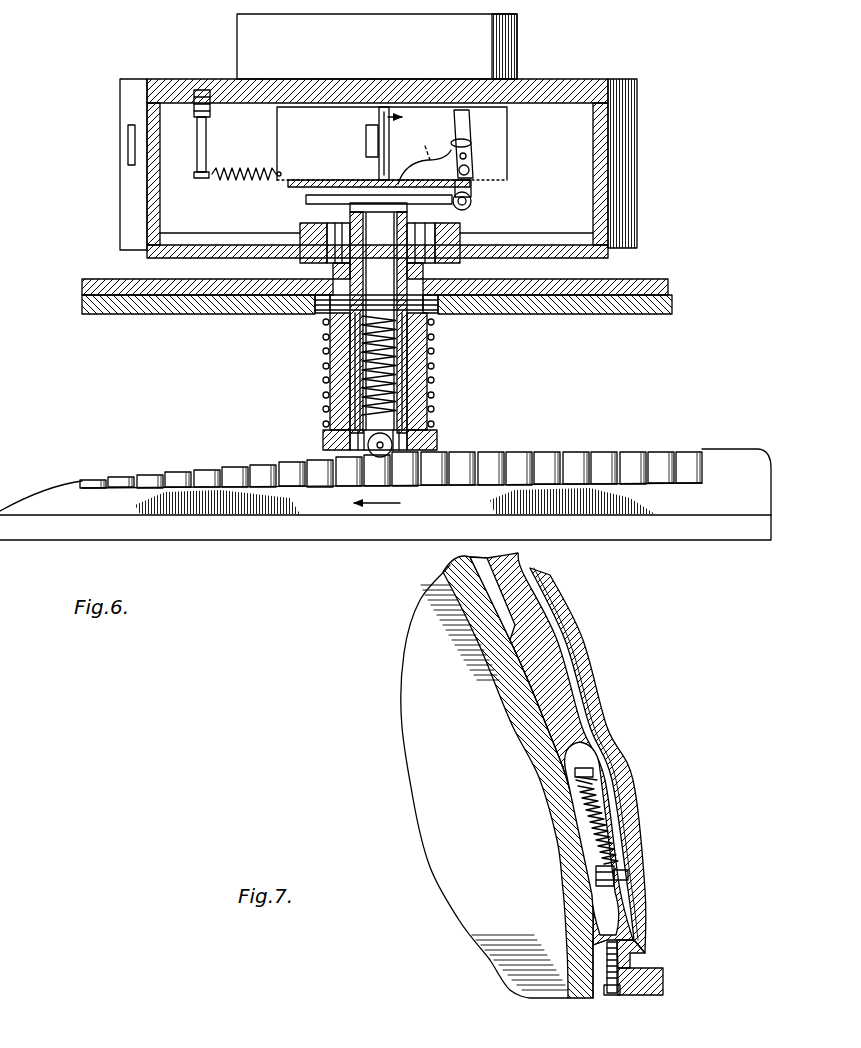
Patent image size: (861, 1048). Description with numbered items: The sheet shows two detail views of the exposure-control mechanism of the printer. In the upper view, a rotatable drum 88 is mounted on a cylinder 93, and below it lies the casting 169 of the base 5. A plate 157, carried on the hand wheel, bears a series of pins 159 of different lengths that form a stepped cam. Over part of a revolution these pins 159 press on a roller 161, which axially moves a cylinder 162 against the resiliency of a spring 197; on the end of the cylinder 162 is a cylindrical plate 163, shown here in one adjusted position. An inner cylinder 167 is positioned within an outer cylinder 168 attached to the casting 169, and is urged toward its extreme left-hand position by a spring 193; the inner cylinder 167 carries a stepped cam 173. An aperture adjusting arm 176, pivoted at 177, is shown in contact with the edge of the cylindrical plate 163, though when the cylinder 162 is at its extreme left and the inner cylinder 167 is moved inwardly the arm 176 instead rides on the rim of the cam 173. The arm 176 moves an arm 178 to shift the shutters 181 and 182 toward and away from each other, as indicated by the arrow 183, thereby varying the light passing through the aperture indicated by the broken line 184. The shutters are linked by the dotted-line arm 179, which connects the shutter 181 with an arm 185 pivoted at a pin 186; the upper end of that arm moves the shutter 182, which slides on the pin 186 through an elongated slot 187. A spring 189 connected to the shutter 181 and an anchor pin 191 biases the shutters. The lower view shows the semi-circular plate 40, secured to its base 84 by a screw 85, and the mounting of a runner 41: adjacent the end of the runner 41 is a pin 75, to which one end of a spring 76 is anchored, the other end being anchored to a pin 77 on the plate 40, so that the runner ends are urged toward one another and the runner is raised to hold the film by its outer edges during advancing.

In FIG. 6, the base 5 is at (650, 279).
In FIG. 7, the semi-circular plate 40 is at (546, 637).
In FIG. 7, the runner 41 is at (548, 598).
In FIG. 7, the pin 75 is at (600, 882).
In FIG. 7, the spring 76 is at (585, 840).
In FIG. 7, the pin 77 is at (580, 776).
In FIG. 7, the base 84 is at (664, 980).
In FIG. 7, the screw 85 is at (610, 996).
In FIG. 6, the rotatable drum 88 is at (624, 191).
In FIG. 6, the cylinder 93 is at (505, 51).
In FIG. 6, the plate 157 is at (345, 532).
In FIG. 6, the pins 159 is at (231, 463).
In FIG. 6, the roller 161 is at (386, 458).
In FIG. 6, the cylinder 162 is at (408, 232).
In FIG. 6, the cylindrical plate 163 is at (305, 201).
In FIG. 6, the cylinder 167 is at (412, 369).
In FIG. 6, the cylinder 168 is at (330, 374).
In FIG. 6, the casting 169 is at (583, 305).
In FIG. 6, the cam 173 is at (464, 263).
In FIG. 6, the aperture adjusting arm 176 is at (412, 168).
In FIG. 6, the pivot 177 is at (472, 204).
In FIG. 6, the arm 178 is at (473, 190).
In FIG. 6, the arm 179 is at (423, 143).
In FIG. 6, the shutter 181 is at (392, 143).
In FIG. 6, the shutter 182 is at (492, 118).
In FIG. 6, the arrow 183 is at (384, 106).
In FIG. 6, the broken line 184 is at (366, 149).
In FIG. 6, the arm 185 is at (474, 163).
In FIG. 6, the pin 186 is at (460, 143).
In FIG. 6, the elongated slot 187 is at (473, 143).
In FIG. 6, the spring 189 is at (251, 180).
In FIG. 6, the anchor pin 191 is at (207, 141).
In FIG. 6, the spring 193 is at (330, 409).
In FIG. 6, the spring 197 is at (396, 353).